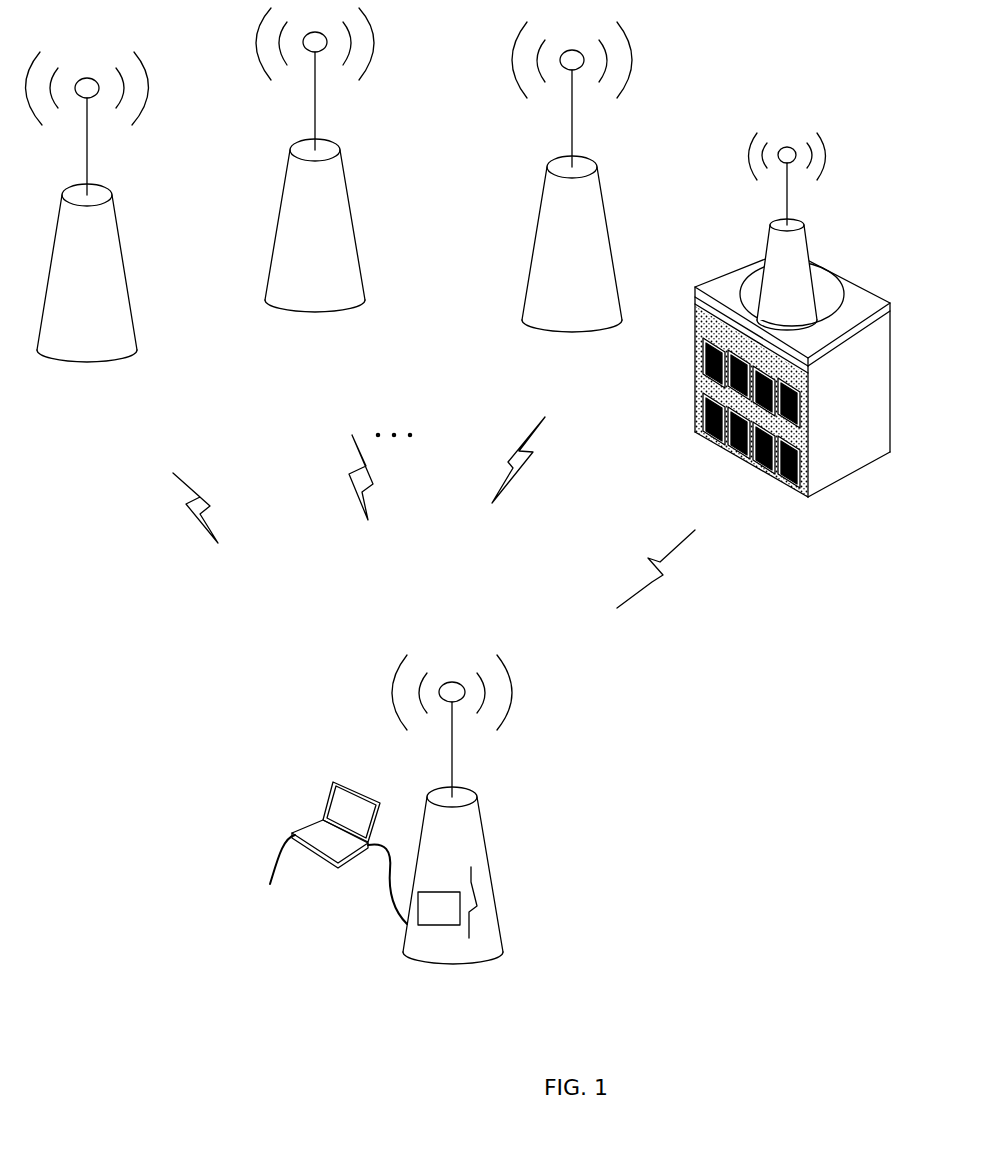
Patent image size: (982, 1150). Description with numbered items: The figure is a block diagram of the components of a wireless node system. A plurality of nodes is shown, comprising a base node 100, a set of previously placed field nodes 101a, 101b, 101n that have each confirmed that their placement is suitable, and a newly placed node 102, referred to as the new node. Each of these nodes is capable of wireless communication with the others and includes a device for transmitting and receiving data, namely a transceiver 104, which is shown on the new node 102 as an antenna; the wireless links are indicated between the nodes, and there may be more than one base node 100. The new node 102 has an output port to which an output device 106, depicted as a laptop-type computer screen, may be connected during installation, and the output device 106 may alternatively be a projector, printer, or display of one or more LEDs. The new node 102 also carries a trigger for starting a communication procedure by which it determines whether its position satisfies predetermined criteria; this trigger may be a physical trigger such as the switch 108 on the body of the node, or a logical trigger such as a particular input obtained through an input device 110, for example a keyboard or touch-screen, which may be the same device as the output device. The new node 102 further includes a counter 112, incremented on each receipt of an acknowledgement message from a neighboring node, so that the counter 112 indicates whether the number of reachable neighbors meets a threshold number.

The base node 100 is at (688, 469).
The field node 101a is at (128, 391).
The field node 101b is at (325, 356).
The field node 101n is at (511, 370).
The newly placed node 102 is at (494, 806).
The transceiver 104 is at (452, 682).
The output device 106 is at (352, 813).
The switch 108 is at (472, 882).
The input device 110 is at (268, 882).
The counter 112 is at (440, 907).